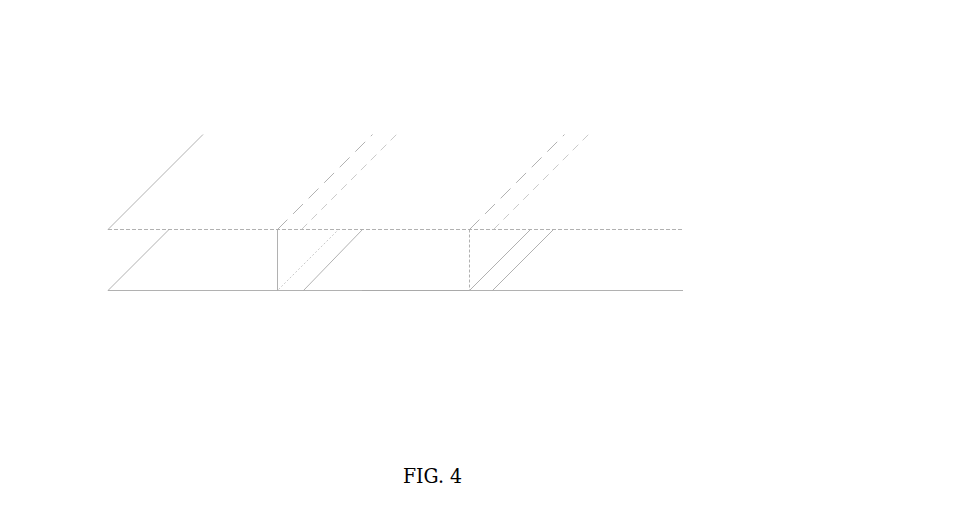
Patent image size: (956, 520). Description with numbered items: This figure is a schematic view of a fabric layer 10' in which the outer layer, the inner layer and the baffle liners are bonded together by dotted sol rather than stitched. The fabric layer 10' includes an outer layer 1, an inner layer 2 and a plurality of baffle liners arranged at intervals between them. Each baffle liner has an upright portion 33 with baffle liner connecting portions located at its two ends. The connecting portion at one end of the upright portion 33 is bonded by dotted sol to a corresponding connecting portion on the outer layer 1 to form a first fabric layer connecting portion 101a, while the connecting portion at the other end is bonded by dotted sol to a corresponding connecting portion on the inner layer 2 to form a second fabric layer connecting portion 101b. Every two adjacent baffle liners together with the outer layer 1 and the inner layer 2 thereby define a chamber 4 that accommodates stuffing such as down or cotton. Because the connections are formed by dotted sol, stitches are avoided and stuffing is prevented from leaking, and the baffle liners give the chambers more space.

The outer layer 1 is at (155, 182).
The inner layer 2 is at (122, 276).
The upright portion 33 is at (277, 262).
The first fabric layer connecting portion 101a is at (357, 150).
The second fabric layer connecting portion 101b is at (303, 273).
The chamber 4 is at (405, 273).
The fabric layer 10' is at (757, 217).